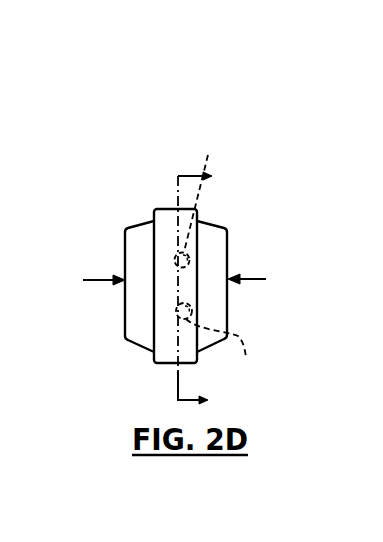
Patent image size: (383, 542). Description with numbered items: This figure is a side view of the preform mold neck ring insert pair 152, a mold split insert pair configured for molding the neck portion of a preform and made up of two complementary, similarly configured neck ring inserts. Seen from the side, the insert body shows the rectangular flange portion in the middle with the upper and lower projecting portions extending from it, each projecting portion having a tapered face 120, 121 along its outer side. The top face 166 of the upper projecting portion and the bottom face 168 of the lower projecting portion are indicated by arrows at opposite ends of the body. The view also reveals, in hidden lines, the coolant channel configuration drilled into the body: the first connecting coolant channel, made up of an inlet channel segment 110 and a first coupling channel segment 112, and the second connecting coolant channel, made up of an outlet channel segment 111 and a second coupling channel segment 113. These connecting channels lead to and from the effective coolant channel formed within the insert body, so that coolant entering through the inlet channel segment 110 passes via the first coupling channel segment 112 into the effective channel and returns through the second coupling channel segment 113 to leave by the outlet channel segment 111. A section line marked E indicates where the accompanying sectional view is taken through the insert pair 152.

The preform mold neck ring insert pair 152 is at (258, 121).
The tapered face 120 is at (131, 226).
The tapered face 121 is at (215, 224).
The first coupling channel segment 112 is at (204, 190).
The inlet channel segment 110 is at (190, 265).
The outlet channel segment 111 is at (192, 304).
The second coupling channel segment 113 is at (226, 353).
The top face 166 is at (79, 281).
The bottom face 168 is at (268, 280).